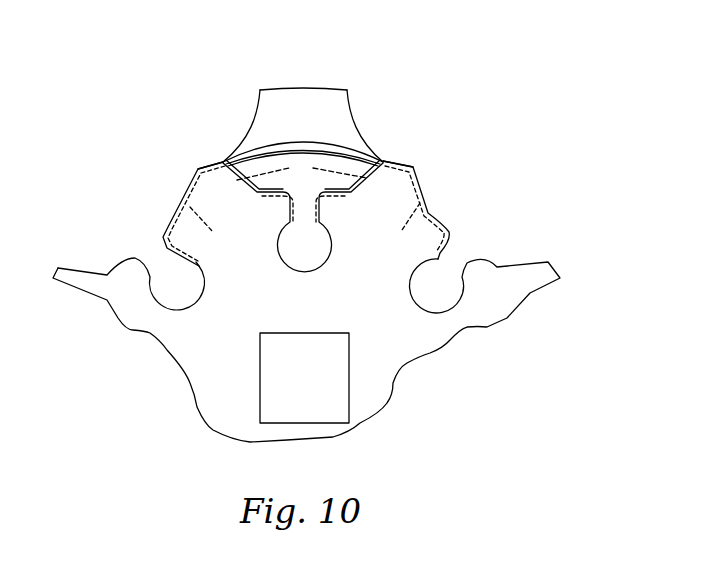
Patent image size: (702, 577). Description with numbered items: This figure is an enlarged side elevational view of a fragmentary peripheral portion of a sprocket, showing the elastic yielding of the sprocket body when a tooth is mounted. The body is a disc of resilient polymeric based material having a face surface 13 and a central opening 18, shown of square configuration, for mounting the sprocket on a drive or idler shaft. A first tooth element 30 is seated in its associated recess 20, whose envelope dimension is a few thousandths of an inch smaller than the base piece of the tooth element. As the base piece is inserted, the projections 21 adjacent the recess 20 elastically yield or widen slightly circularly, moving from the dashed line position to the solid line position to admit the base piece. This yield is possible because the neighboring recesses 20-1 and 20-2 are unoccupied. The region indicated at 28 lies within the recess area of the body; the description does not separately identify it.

The face surface 13 is at (254, 327).
The central opening 18 is at (337, 372).
The recess 20 is at (382, 170).
The recess 20-1 is at (147, 243).
The recess 20-2 is at (463, 247).
The projection 21 is at (217, 177).
The recess 28 is at (274, 179).
The tooth element 30 is at (360, 94).